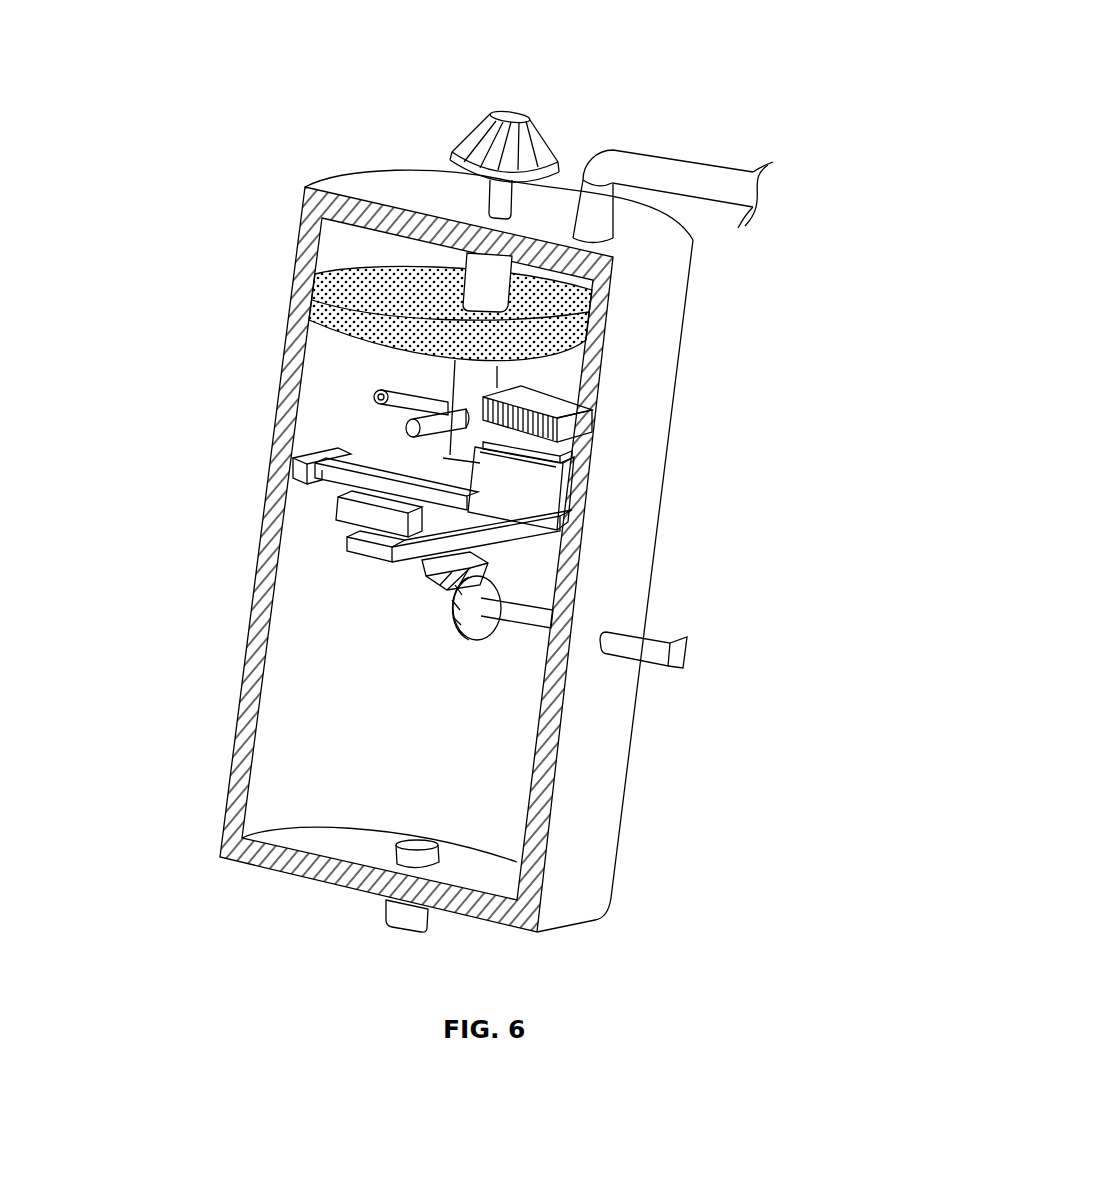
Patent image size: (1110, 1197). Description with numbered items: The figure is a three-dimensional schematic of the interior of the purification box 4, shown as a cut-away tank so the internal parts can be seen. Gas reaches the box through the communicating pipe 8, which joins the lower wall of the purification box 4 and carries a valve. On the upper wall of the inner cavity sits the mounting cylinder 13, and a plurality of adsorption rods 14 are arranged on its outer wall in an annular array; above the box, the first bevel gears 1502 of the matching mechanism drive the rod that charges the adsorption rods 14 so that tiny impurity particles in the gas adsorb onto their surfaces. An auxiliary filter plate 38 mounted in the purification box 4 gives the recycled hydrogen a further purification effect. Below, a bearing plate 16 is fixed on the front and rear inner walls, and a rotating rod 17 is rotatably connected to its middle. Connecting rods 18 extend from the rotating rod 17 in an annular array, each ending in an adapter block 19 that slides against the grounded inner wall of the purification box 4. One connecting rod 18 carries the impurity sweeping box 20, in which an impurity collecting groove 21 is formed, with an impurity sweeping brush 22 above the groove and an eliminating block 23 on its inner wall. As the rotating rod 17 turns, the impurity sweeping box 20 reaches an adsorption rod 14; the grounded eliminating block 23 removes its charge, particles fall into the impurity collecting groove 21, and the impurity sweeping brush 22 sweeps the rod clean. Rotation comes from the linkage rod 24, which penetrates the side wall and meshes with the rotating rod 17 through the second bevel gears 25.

The purification box 4 is at (603, 795).
The communicating pipe 8 is at (410, 862).
The mounting cylinder 13 is at (490, 279).
The adsorption rods 14 is at (384, 396).
The bearing plate 16 is at (372, 548).
The rotating rod 17 is at (458, 556).
The connecting rods 18 is at (348, 474).
The adapter block 19 is at (300, 458).
The impurity sweeping box 20 is at (562, 503).
The impurity collecting groove 21 is at (543, 494).
The impurity sweeping brush 22 is at (548, 420).
The eliminating block 23 is at (562, 441).
The linkage rod 24 is at (655, 650).
The second bevel gears 25 is at (468, 635).
The auxiliary filter plate 38 is at (352, 295).
The first bevel gears 1502 is at (483, 140).